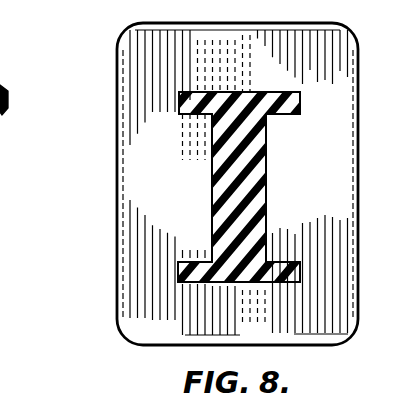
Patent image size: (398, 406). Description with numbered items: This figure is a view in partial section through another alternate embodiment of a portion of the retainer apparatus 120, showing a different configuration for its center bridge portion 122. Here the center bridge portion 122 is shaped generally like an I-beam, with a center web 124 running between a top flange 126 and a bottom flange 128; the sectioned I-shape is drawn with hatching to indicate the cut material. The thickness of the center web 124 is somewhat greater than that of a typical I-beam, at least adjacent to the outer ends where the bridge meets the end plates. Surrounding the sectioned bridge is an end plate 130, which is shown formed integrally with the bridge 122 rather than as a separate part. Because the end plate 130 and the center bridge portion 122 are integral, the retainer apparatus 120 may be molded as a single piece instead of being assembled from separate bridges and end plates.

The retainer apparatus 120 is at (194, 184).
The center bridge portion 122 is at (199, 180).
The center web 124 is at (213, 176).
The top flange 126 is at (278, 115).
The bottom flange 128 is at (197, 261).
The end plate 130 is at (117, 150).